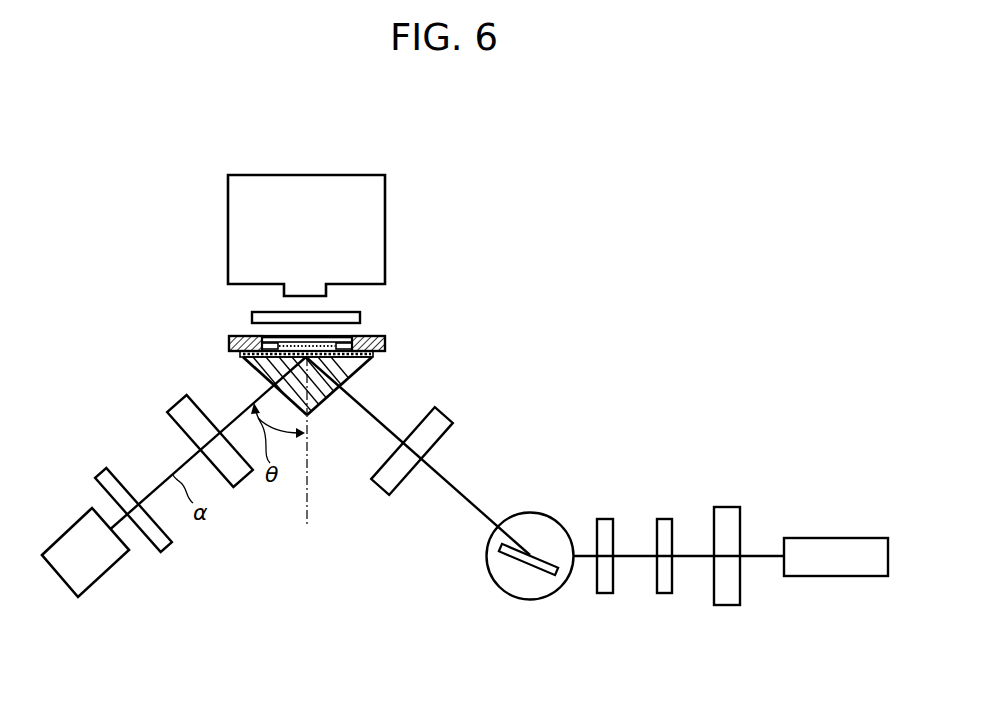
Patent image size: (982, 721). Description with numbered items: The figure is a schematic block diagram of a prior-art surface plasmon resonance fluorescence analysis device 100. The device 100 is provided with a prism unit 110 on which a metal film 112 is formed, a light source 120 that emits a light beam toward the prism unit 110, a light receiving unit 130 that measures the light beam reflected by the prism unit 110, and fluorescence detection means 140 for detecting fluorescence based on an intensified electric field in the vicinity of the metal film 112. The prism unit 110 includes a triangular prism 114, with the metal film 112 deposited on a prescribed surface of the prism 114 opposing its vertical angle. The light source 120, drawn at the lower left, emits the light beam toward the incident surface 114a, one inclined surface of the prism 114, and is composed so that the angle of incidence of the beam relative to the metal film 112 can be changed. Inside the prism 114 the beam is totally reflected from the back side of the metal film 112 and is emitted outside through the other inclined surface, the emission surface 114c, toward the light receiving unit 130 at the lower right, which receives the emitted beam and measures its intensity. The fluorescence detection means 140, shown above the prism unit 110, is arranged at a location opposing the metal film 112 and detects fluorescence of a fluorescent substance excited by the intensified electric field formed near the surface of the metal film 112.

The fluorescence analysis device 100 is at (437, 145).
The prism unit 110 is at (368, 327).
The metal film 112 is at (368, 352).
The prism 114 is at (310, 406).
The incident surface 114a is at (253, 367).
The emission surface 114c is at (331, 393).
The light source 120 is at (71, 511).
The light receiving unit 130 is at (719, 631).
The fluorescence detection means 140 is at (390, 222).